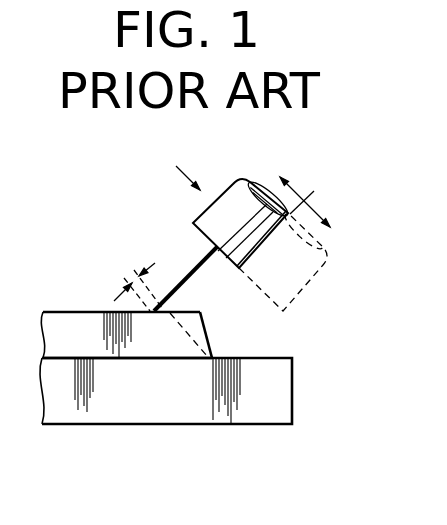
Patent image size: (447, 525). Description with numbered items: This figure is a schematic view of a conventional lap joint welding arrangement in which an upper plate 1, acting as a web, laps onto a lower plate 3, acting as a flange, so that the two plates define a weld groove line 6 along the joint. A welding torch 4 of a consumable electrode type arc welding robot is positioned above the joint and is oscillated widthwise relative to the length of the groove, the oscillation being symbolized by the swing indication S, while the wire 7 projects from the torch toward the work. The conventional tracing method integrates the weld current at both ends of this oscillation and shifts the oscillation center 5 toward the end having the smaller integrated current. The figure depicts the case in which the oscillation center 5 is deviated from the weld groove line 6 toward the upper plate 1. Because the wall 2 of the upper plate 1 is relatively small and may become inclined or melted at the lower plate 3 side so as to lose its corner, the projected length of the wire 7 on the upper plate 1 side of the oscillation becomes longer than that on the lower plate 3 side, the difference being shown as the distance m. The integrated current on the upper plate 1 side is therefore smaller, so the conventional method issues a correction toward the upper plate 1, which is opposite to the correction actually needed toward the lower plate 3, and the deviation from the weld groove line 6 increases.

The upper plate 1 is at (62, 322).
The wall of upper plate 2 is at (203, 322).
The lower plate 3 is at (142, 408).
The welding torch 4 is at (216, 207).
The oscillation center 5 is at (307, 202).
The weld groove line 6 is at (211, 356).
The wire 7 is at (188, 272).
The scanning direction S is at (190, 185).
The distance m is at (135, 279).